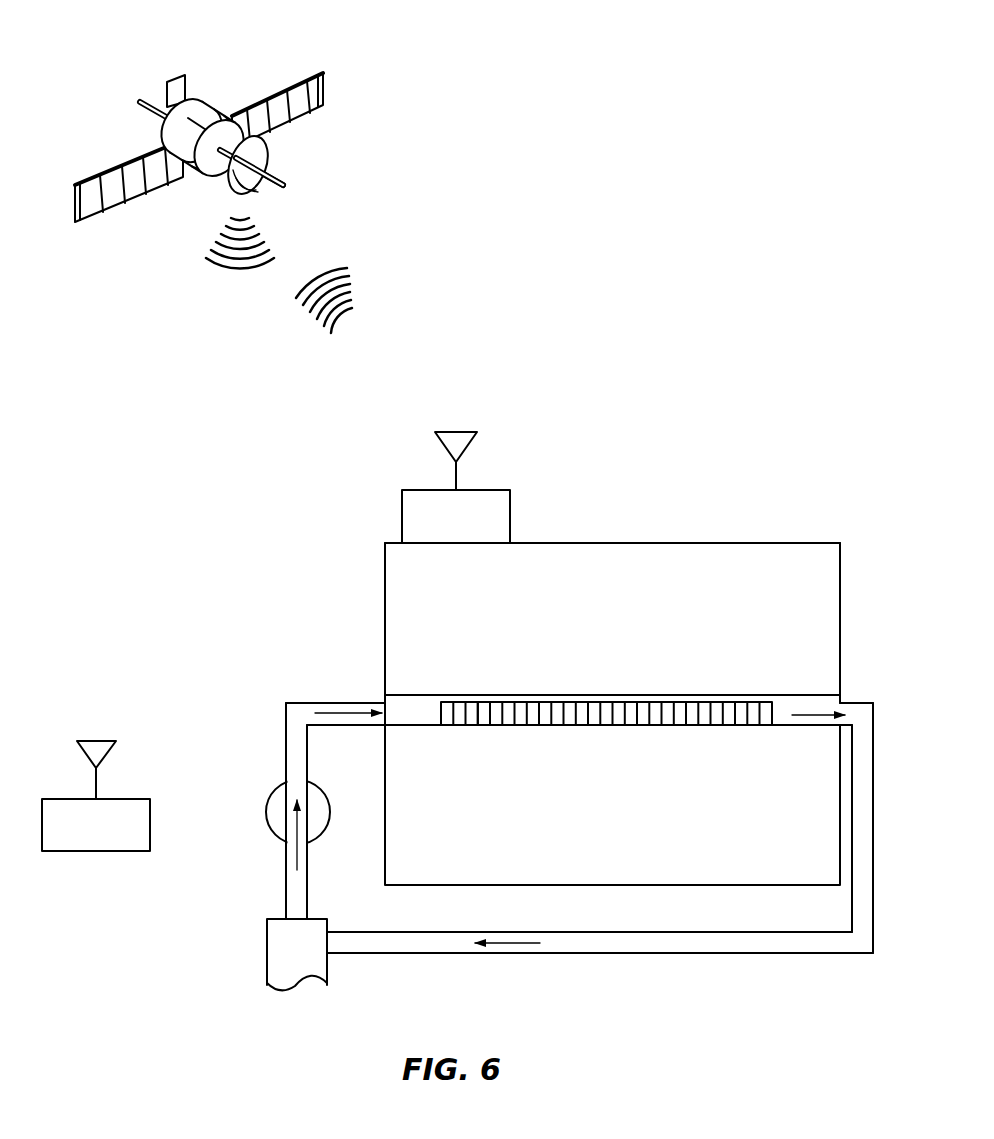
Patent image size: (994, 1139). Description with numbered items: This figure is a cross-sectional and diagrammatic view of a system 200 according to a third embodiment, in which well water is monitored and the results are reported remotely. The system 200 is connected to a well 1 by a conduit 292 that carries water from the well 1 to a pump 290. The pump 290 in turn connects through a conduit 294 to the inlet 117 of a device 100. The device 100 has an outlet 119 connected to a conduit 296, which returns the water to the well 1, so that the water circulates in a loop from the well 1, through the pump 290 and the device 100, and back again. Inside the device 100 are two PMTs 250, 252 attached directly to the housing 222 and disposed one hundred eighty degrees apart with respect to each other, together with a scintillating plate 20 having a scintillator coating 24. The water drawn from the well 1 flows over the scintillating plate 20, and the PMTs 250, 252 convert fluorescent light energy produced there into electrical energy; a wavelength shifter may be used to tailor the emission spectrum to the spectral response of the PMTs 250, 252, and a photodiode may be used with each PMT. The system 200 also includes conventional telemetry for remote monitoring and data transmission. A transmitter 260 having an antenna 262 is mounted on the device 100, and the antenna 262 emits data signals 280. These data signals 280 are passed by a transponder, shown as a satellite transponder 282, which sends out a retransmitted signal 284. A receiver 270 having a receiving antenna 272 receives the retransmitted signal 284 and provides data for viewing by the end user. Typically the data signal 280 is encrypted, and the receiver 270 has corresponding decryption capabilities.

The satellite transponder 282 is at (229, 78).
The retransmitted signal 284 is at (217, 245).
The data signals 280 is at (347, 287).
The device 100 is at (701, 526).
The antenna 262 is at (462, 432).
The transmitter 260 is at (510, 520).
The PMT 250 is at (808, 607).
The housing 222 is at (607, 543).
The system 200 is at (351, 624).
The inlet 117 is at (384, 695).
The outlet 119 is at (848, 703).
The conduit 294 is at (302, 703).
The conduit 296 is at (862, 812).
The pump 290 is at (275, 790).
The conduit 292 is at (286, 874).
The well 1 is at (267, 960).
The receiving antenna 272 is at (109, 750).
The receiver 270 is at (150, 824).
The PMT 252 is at (612, 805).
The scintillating plate 20 is at (606, 713).
The scintillator coating 24 is at (481, 716).